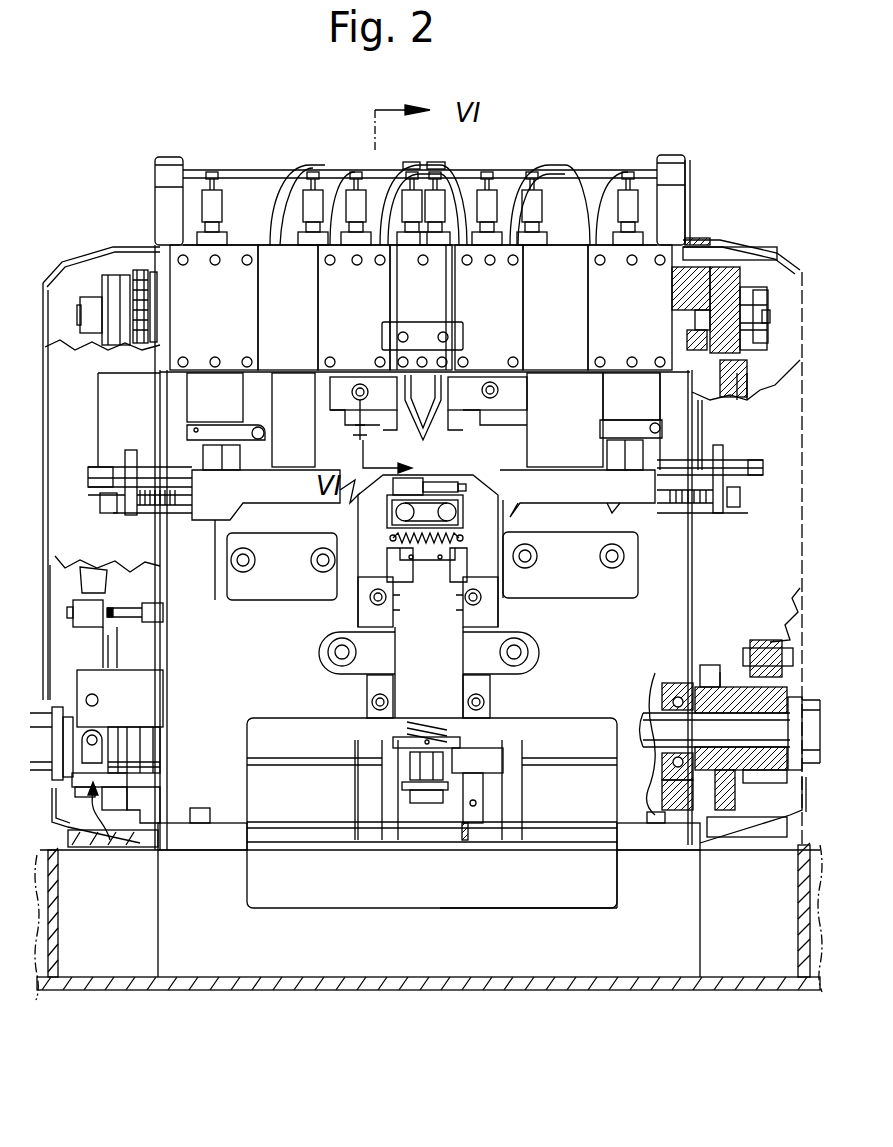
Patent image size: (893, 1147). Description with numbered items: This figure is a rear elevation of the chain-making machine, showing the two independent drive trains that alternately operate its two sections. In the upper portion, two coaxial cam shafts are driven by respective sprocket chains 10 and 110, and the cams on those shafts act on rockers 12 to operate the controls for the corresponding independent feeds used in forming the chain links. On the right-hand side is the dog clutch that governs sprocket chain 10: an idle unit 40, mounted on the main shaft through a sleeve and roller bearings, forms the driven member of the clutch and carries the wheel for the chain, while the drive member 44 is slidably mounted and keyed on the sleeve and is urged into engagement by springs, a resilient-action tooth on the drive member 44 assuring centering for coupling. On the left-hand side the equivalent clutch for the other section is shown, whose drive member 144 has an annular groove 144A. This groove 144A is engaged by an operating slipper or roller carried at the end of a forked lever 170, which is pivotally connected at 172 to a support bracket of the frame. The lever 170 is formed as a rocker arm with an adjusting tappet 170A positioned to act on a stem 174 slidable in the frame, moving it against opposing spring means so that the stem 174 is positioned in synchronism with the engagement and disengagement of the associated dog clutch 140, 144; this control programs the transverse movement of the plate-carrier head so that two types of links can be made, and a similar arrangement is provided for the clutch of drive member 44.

The sprocket chain 10 is at (733, 238).
The rockers 12 is at (293, 170).
The idle unit 40 is at (727, 677).
The drive member 44 is at (750, 772).
The sprocket chain 110 is at (138, 270).
The dog clutch 140 is at (130, 733).
The drive member 144 is at (120, 787).
The groove 144A is at (113, 845).
The forked lever 170 is at (113, 632).
The adjusting tappet 170A is at (110, 608).
The pivot 172 is at (98, 700).
The stem 174 is at (130, 608).